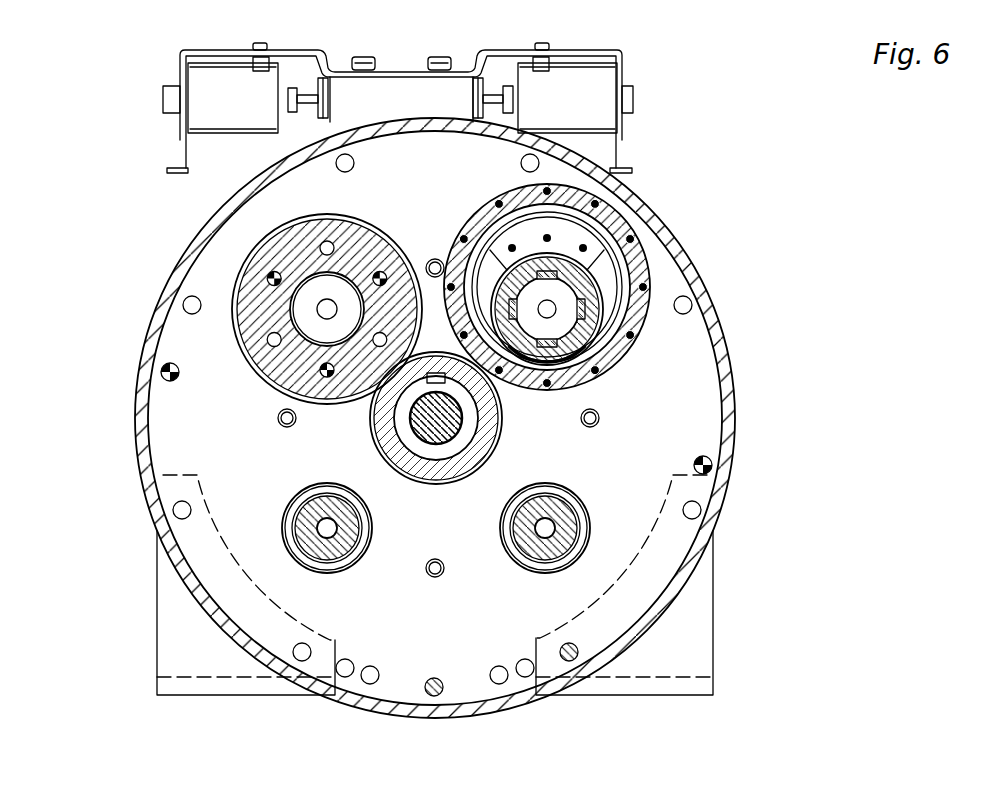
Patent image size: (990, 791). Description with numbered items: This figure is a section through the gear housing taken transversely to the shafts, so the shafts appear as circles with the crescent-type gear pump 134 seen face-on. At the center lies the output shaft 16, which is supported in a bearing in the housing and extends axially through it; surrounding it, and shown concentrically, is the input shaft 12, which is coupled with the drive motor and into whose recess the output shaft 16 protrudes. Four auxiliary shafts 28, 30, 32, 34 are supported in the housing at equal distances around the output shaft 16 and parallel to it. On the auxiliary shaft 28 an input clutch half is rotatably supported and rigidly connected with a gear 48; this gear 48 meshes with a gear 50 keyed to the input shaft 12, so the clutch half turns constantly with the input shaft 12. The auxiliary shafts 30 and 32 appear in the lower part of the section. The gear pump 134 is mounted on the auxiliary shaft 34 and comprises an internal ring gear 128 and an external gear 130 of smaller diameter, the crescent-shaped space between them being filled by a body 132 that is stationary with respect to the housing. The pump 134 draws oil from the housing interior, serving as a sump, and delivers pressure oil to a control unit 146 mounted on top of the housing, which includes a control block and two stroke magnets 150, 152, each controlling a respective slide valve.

The input shaft 12 is at (467, 410).
The output shaft 16 is at (432, 427).
The auxiliary shaft 28 is at (308, 300).
The auxiliary shaft 30 is at (560, 528).
The auxiliary shaft 32 is at (313, 512).
The auxiliary shaft 34 is at (570, 322).
The gear 48 is at (273, 318).
The gear 50 is at (458, 462).
The internal ring gear 128 is at (600, 227).
The external gear 130 is at (578, 290).
The body 132 is at (590, 257).
The gear pump 134 is at (622, 200).
The control unit 146 is at (410, 65).
The stroke magnet 150 is at (573, 88).
The stroke magnet 152 is at (225, 92).